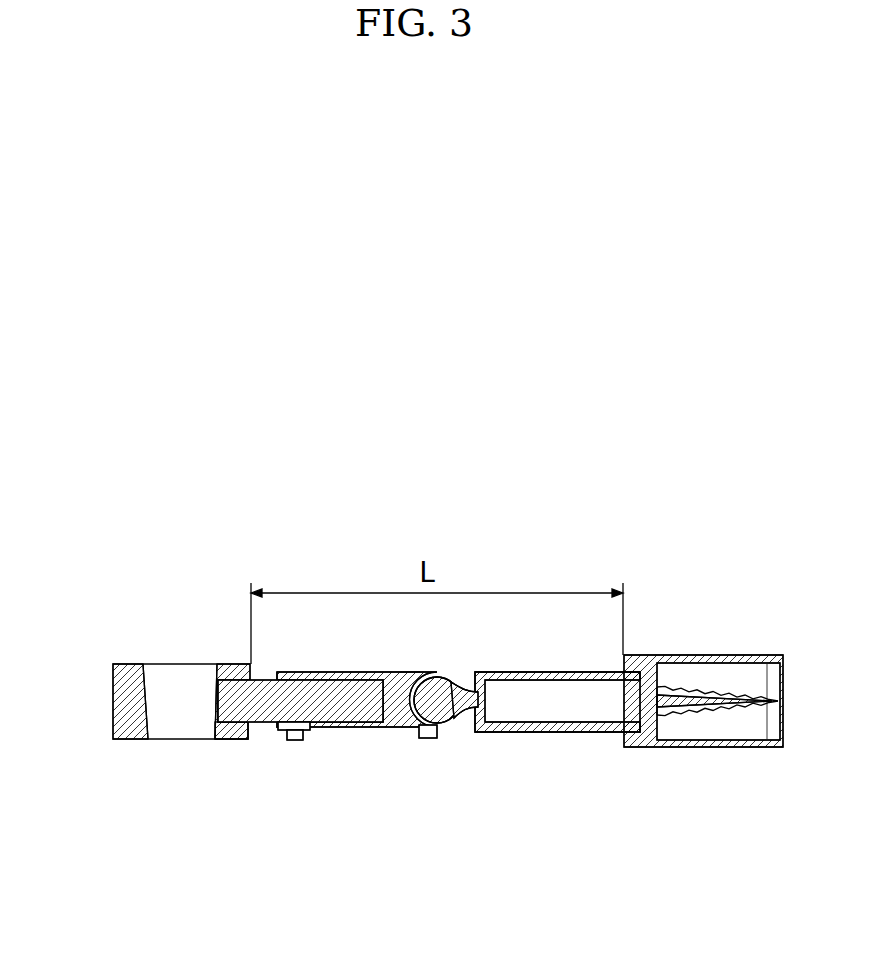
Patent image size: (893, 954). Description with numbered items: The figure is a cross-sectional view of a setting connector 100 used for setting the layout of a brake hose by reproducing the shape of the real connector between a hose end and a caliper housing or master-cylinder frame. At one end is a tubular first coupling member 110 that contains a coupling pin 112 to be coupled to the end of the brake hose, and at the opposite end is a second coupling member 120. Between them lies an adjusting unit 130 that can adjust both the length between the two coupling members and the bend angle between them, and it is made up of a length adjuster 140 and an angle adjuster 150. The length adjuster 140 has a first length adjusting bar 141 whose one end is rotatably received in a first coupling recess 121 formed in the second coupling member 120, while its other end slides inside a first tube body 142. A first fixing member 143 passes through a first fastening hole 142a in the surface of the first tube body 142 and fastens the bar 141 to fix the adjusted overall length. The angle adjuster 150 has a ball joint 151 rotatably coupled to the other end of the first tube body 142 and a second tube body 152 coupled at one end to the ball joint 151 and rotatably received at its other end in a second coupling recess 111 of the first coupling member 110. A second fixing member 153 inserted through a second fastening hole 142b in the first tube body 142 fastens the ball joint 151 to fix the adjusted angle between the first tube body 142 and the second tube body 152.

The setting connector 100 is at (726, 505).
The first coupling member 110 is at (667, 704).
The second coupling recess 111 is at (622, 732).
The coupling pin 112 is at (710, 693).
The second coupling member 120 is at (143, 738).
The first coupling recess 121 is at (228, 725).
The adjusting unit 130 is at (429, 775).
The length adjuster 140 is at (328, 748).
The first length adjusting bar 141 is at (267, 723).
The first tube body 142 is at (358, 715).
The first fastening hole 142a is at (283, 710).
The second fastening hole 142b is at (421, 671).
The first fixing member 143 is at (296, 741).
The angle adjuster 150 is at (524, 774).
The ball joint 151 is at (458, 718).
The second tube body 152 is at (528, 733).
The second fixing member 153 is at (425, 768).